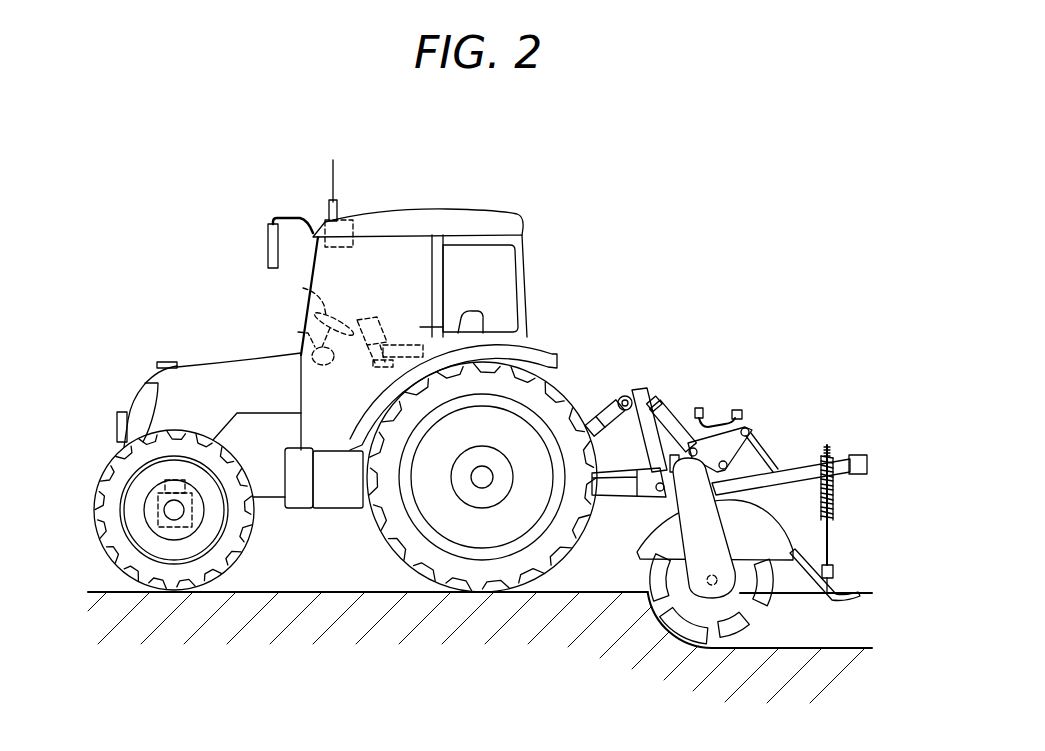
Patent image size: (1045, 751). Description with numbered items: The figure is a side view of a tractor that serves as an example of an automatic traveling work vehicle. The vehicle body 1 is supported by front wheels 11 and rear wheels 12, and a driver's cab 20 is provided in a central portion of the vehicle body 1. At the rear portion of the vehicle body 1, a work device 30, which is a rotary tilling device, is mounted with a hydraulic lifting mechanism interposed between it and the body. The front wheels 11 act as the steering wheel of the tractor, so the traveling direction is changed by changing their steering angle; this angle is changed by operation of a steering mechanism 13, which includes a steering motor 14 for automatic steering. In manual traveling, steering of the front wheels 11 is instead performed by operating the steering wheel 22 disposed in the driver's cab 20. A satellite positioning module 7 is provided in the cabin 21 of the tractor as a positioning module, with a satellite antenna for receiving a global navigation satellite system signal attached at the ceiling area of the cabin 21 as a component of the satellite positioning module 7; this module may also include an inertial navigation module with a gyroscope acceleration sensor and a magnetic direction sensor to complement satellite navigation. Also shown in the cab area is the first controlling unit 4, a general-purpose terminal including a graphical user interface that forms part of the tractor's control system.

The vehicle body 1 is at (200, 254).
The first controlling unit 4 is at (377, 313).
The satellite positioning module 7 is at (352, 218).
The front wheels 11 is at (172, 594).
The rear wheels 12 is at (493, 578).
The steering mechanism 13 is at (190, 525).
The steering motor 14 is at (152, 483).
The driver's cab 20 is at (384, 283).
The cabin 21 is at (503, 220).
The steering wheel 22 is at (310, 294).
The work device 30 is at (774, 408).